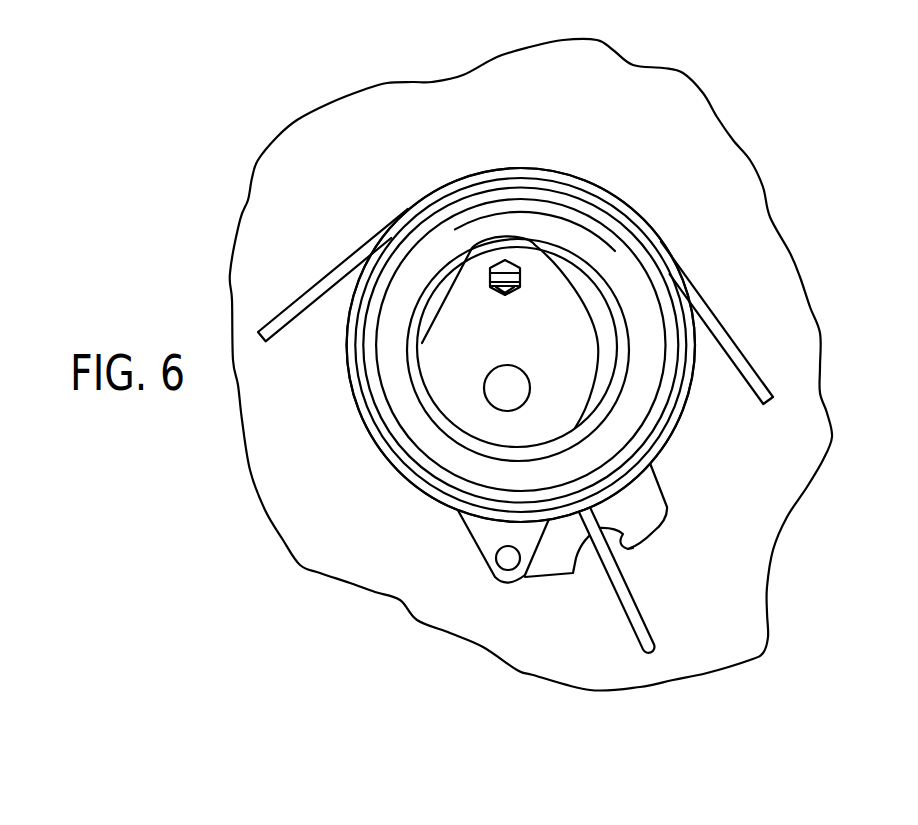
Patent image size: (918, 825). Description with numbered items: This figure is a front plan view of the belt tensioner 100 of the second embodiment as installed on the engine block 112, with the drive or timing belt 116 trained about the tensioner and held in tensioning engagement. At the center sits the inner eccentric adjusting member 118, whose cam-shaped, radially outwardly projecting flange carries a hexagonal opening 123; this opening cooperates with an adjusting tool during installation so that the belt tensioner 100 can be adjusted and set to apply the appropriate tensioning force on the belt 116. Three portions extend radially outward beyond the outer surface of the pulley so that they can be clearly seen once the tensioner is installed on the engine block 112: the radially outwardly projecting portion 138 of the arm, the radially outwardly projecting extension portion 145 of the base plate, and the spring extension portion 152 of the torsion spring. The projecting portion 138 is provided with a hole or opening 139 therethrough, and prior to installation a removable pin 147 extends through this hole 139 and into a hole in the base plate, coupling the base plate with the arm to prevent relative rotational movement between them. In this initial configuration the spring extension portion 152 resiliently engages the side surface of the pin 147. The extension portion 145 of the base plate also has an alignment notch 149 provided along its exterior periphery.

The belt tensioner 100 is at (526, 307).
The engine block 112 is at (607, 67).
The drive or timing belt 116 is at (723, 325).
The inner eccentric adjusting member 118 is at (560, 328).
The hexagonal opening 123 is at (492, 265).
The radially outwardly projecting portion 138 is at (485, 541).
The hole or opening 139 is at (525, 579).
The radially outwardly projecting extension portion 145 is at (653, 508).
The removable pin 147 is at (503, 562).
The alignment notch 149 is at (634, 552).
The spring extension portion 152 is at (647, 613).